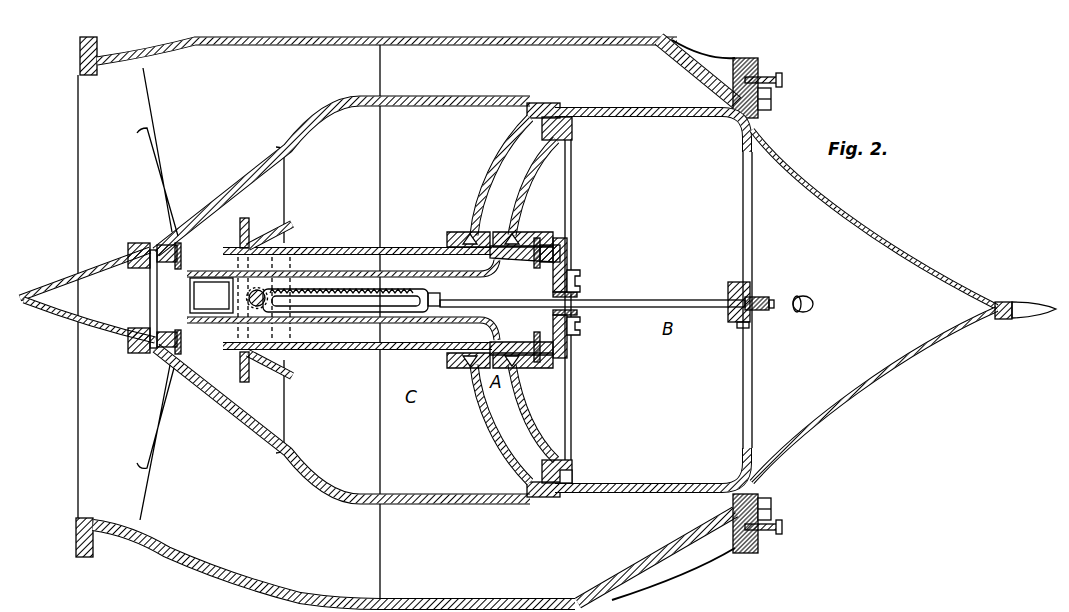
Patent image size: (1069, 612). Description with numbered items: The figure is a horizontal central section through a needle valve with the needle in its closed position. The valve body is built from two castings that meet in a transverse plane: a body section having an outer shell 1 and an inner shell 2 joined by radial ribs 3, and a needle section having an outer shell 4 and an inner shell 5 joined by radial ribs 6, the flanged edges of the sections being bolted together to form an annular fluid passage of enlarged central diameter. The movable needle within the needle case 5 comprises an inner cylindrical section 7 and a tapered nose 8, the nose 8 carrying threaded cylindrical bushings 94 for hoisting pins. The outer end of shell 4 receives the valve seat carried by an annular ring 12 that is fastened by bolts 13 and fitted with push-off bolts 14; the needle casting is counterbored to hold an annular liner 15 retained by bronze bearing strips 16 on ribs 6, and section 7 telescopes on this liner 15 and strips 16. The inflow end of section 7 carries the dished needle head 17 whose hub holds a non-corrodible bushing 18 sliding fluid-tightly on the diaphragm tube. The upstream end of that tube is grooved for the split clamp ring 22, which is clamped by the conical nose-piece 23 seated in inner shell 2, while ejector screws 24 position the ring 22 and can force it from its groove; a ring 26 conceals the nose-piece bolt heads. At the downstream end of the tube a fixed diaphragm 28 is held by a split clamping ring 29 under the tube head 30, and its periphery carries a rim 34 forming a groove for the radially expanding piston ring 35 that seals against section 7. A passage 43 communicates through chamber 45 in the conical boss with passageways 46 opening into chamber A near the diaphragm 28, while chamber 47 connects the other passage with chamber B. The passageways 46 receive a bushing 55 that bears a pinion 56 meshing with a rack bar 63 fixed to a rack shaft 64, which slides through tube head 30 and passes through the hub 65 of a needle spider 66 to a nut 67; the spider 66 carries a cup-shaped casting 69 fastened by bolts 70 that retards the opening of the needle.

The outer shell 1 is at (170, 548).
The inner shell 2 is at (274, 135).
The radial ribs 3 is at (170, 172).
The outer shell 4 is at (656, 52).
The inner shell 5 is at (474, 105).
The radial ribs 6 is at (696, 54).
The inner cylindrical section 7 is at (655, 118).
The tapered nose 8 is at (871, 232).
The annular ring 12 is at (760, 114).
The bolts 13 is at (772, 100).
The push-off bolts 14 is at (782, 80).
The annular sleeve or liner 15 is at (546, 98).
The bronze bearing strips 16 is at (610, 505).
The needle head 17 is at (480, 185).
The non-corrodible bushing 18 is at (489, 252).
The split locking or clamp ring 22 is at (178, 268).
The nose-piece 23 is at (68, 280).
The ejector screws 24 is at (200, 270).
The ring 26 is at (140, 247).
The fixed diaphragm 28 is at (525, 186).
The split clamping ring 29 is at (539, 244).
The tube head 30 is at (563, 247).
The rim 34 is at (572, 469).
The piston ring 35 is at (574, 128).
The passage 43 is at (560, 286).
The chamber 45 is at (215, 299).
The passageways 46 is at (357, 298).
The chamber 47 is at (278, 222).
The bushing 55 is at (211, 295).
The pinion 56 is at (272, 294).
The rack bar 63 is at (348, 292).
The rack shaft 64 is at (500, 300).
The hub 65 is at (757, 316).
The needle spider 66 is at (752, 296).
The nut 67 is at (774, 310).
The cup-shaped casting 69 is at (735, 328).
The bolts 70 is at (578, 278).
The cylindrical bushings 94 is at (803, 297).